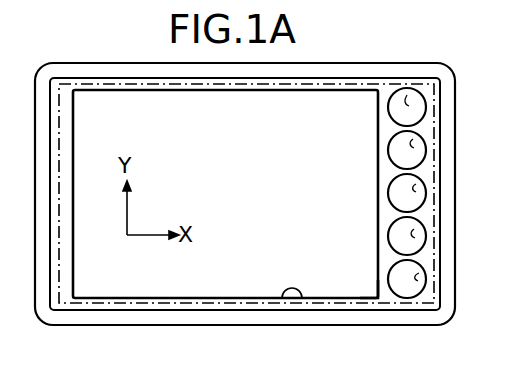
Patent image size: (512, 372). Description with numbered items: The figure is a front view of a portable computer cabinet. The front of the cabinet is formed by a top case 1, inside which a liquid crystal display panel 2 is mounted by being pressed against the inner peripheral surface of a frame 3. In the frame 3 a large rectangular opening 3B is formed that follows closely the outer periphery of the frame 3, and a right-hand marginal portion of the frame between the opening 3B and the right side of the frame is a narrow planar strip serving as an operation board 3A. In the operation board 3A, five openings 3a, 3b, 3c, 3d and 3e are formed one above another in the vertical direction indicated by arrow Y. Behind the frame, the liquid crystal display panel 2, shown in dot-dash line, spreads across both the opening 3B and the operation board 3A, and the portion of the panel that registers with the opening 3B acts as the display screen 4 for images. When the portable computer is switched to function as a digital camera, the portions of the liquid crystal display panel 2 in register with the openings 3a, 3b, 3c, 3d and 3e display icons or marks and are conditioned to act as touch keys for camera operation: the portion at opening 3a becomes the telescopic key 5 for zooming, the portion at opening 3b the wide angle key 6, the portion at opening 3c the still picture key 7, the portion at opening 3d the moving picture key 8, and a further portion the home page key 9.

The top case 1 is at (314, 63).
The liquid crystal display panel 2 is at (78, 308).
The frame 3 is at (50, 293).
The operation board 3A is at (388, 296).
The opening 3B is at (295, 298).
The opening 3a is at (418, 108).
The opening 3b is at (416, 157).
The opening 3c is at (418, 201).
The opening 3d is at (416, 249).
The opening 3e is at (418, 291).
The display screen 4 is at (141, 286).
The telescopic key 5 is at (407, 95).
The wide angle key 6 is at (413, 139).
The still picture key 7 is at (416, 184).
The moving picture key 8 is at (414, 229).
The home page key 9 is at (419, 273).